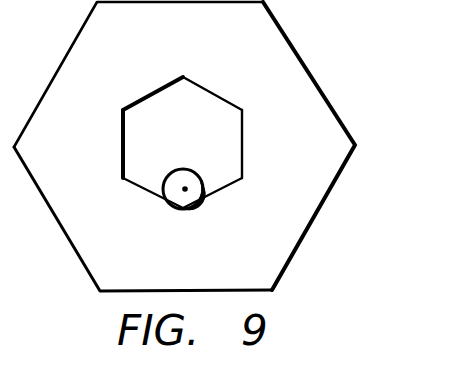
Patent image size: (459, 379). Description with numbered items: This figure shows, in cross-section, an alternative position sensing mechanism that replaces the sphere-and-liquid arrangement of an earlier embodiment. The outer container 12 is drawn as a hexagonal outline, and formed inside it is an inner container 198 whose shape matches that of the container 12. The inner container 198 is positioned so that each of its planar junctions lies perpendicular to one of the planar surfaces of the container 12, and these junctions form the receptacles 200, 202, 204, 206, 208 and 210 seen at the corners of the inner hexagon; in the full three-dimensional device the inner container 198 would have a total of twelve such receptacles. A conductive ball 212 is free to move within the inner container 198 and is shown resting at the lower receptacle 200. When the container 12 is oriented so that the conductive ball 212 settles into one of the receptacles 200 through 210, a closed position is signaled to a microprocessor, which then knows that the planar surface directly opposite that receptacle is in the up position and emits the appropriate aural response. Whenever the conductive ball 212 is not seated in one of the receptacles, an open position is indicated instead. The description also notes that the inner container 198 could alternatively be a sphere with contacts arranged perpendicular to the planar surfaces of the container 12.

The container 12 is at (302, 54).
The inner container 198 is at (122, 143).
The receptacle 200 is at (183, 209).
The receptacle 202 is at (122, 179).
The receptacle 204 is at (122, 110).
The receptacle 206 is at (183, 77).
The receptacle 208 is at (242, 109).
The receptacle 210 is at (242, 178).
The conductive ball 212 is at (183, 169).